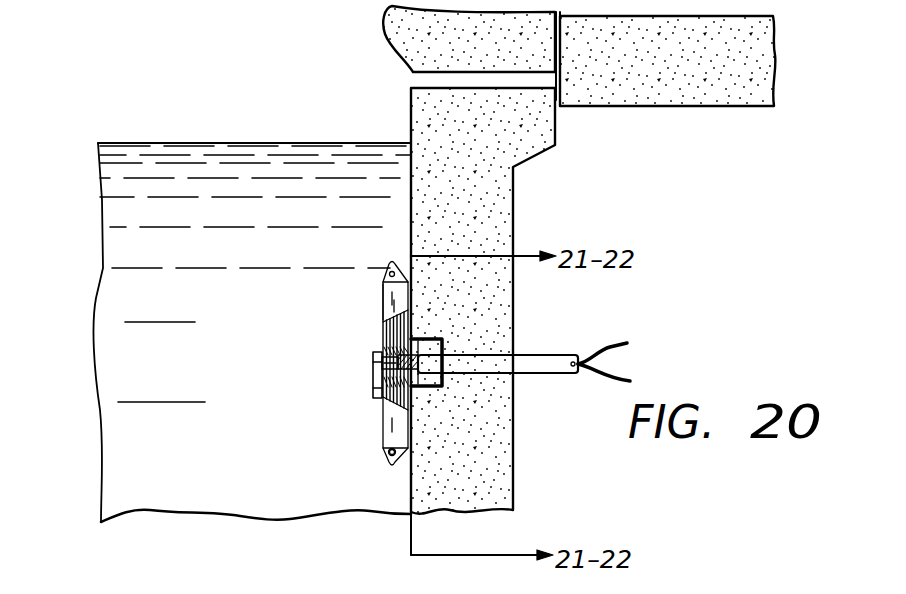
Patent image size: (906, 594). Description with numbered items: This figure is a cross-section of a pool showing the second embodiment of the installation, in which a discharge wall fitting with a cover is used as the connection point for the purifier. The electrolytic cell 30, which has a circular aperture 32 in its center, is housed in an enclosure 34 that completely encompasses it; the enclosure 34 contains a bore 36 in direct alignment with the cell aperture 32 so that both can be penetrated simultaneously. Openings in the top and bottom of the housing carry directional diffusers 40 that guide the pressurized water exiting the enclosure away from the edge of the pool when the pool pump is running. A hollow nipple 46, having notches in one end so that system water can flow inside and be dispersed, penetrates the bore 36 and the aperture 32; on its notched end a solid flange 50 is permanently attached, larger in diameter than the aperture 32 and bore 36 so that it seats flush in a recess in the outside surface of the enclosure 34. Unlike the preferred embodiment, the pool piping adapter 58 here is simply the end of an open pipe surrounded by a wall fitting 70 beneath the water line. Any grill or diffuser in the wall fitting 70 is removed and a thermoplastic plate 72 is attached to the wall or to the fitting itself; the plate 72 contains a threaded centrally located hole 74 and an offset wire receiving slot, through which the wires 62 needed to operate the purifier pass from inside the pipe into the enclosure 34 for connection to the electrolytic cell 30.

The electrolytic cell 30 is at (382, 398).
The circular aperture 32 is at (375, 350).
The enclosure 34 is at (383, 293).
The bore 36 is at (377, 375).
The directional diffusers 40 is at (396, 260).
The nipple 46 is at (442, 387).
The flange 50 is at (375, 365).
The pool piping adapter 58 is at (444, 386).
The wires 62 is at (608, 347).
The wall fitting 70 is at (445, 338).
The plate 72 is at (393, 452).
The threaded centrally located hole 74 is at (700, 593).